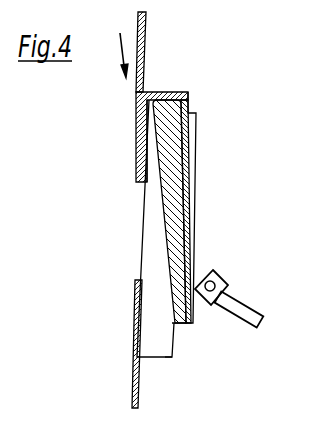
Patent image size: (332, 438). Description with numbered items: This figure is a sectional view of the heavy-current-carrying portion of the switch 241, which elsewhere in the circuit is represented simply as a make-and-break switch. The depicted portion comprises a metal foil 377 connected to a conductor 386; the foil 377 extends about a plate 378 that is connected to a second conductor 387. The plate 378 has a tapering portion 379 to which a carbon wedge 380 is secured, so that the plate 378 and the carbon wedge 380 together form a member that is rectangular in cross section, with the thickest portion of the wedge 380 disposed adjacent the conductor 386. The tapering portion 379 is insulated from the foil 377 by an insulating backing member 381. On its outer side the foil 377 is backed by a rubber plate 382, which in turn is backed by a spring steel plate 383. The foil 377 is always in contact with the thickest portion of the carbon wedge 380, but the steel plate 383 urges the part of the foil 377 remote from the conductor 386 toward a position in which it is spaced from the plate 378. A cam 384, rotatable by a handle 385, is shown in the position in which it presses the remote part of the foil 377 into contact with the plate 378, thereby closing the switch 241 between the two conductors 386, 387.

The switch 241 is at (108, 47).
The conductor 386 is at (145, 62).
The carbon wedge 380 is at (166, 112).
The insulating backing member 381 is at (150, 148).
The metal foil 377 is at (176, 186).
The rubber plate 382 is at (187, 222).
The spring steel plate 383 is at (194, 256).
The tapering portion 379 is at (145, 199).
The plate 378 is at (163, 352).
The conductor 387 is at (137, 402).
The cam 384 is at (223, 283).
The handle 385 is at (256, 323).